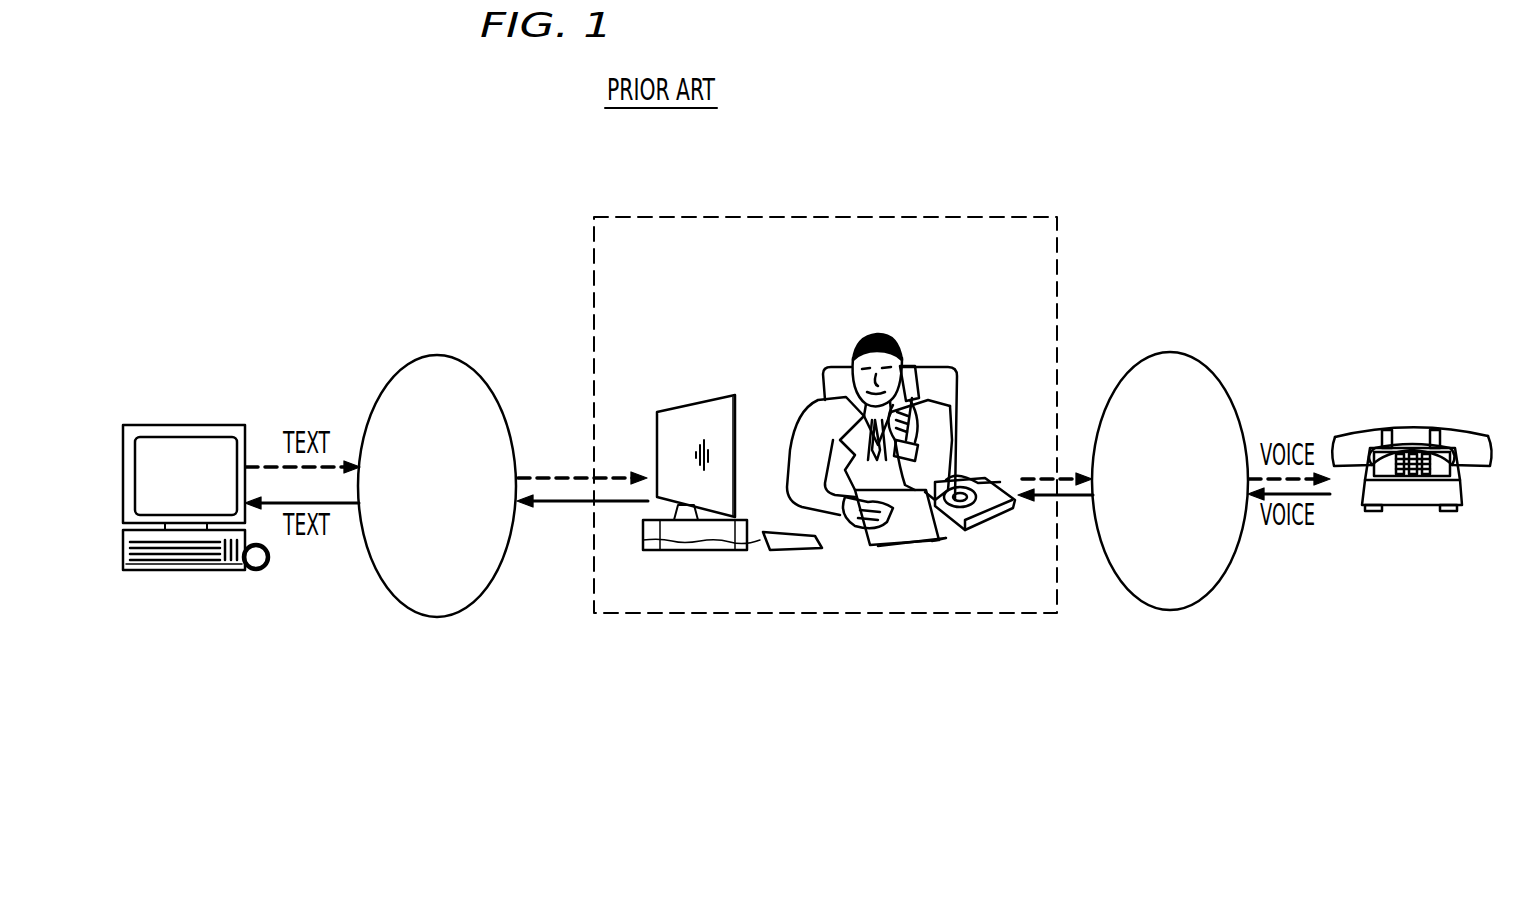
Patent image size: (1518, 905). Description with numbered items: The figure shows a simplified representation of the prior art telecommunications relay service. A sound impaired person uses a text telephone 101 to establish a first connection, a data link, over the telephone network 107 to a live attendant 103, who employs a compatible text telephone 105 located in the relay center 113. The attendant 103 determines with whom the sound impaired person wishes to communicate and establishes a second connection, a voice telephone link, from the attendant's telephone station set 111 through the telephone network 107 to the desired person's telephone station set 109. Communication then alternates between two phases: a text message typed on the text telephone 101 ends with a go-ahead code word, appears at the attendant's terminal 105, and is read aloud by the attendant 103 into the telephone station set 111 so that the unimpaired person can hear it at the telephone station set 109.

The text telephone 101 is at (195, 425).
The live attendant 103 is at (858, 339).
The compatible text telephone 105 is at (697, 402).
The telephone network 107 is at (407, 358).
The telephone station set 109 is at (1413, 423).
The telephone station set 111 is at (984, 478).
The relay center 113 is at (960, 216).